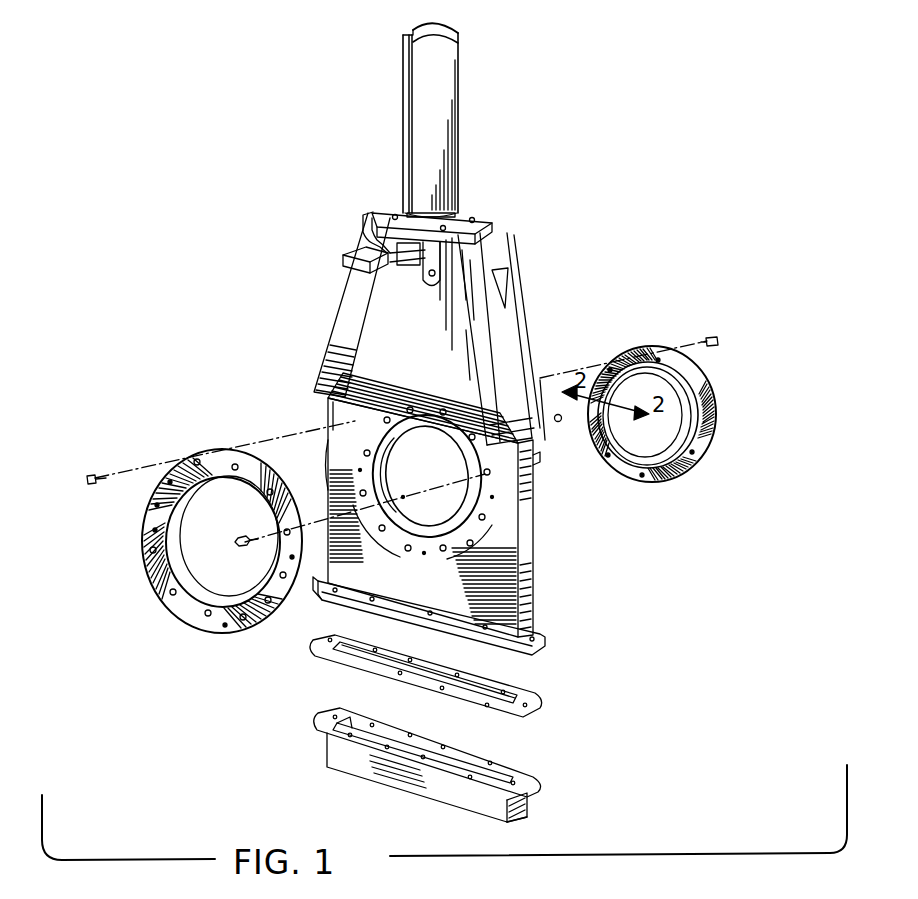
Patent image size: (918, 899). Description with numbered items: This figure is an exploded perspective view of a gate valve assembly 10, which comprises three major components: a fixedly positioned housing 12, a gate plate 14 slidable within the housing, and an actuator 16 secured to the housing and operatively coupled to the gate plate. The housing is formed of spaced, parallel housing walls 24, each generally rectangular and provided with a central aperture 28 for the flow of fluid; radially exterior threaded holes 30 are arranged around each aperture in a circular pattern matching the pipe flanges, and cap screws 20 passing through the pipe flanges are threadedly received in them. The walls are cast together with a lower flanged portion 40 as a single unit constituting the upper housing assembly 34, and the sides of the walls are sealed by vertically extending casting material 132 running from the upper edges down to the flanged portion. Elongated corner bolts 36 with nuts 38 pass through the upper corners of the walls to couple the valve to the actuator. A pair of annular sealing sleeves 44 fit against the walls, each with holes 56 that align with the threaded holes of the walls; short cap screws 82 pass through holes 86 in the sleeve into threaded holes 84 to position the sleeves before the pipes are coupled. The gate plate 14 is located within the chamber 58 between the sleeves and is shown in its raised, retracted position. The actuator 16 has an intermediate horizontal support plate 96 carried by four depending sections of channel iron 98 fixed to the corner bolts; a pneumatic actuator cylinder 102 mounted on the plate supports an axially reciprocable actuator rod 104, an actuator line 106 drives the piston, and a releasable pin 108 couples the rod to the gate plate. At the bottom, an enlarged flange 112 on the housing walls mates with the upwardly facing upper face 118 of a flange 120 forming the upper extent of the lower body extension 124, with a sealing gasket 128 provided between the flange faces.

The gate valve assembly 10 is at (268, 141).
The housing 12 is at (570, 626).
The gate plate 14 is at (380, 311).
The actuator 16 is at (517, 82).
The cap screws 20 is at (194, 574).
The housing walls 24 is at (533, 560).
The central aperture 28 is at (498, 507).
The threaded holes 30 is at (364, 453).
The upper housing assembly 34 is at (598, 619).
The corner bolts 36 is at (533, 459).
The nuts 38 is at (560, 421).
The lower flanged portion 40 is at (181, 450).
The annular sealing sleeves 44 is at (694, 388).
The holes 56 is at (243, 621).
The chamber 58 is at (400, 515).
The short cap screws 82 is at (720, 342).
The threaded holes 84 is at (315, 393).
The holes 86 is at (653, 347).
The horizontal support plate 96 is at (487, 225).
The channel iron sections 98 is at (510, 253).
The pneumatic actuator cylinder 102 is at (460, 130).
The actuator rod 104 is at (365, 246).
The actuator line 106 is at (402, 65).
The releasable pin 108 is at (345, 270).
The enlarged flange 112 is at (545, 640).
The upper face 118 is at (528, 773).
The flange 120 is at (528, 795).
The lower body extension 124 is at (306, 751).
The sealing gasket 128 is at (540, 707).
The casting material 132 is at (540, 378).